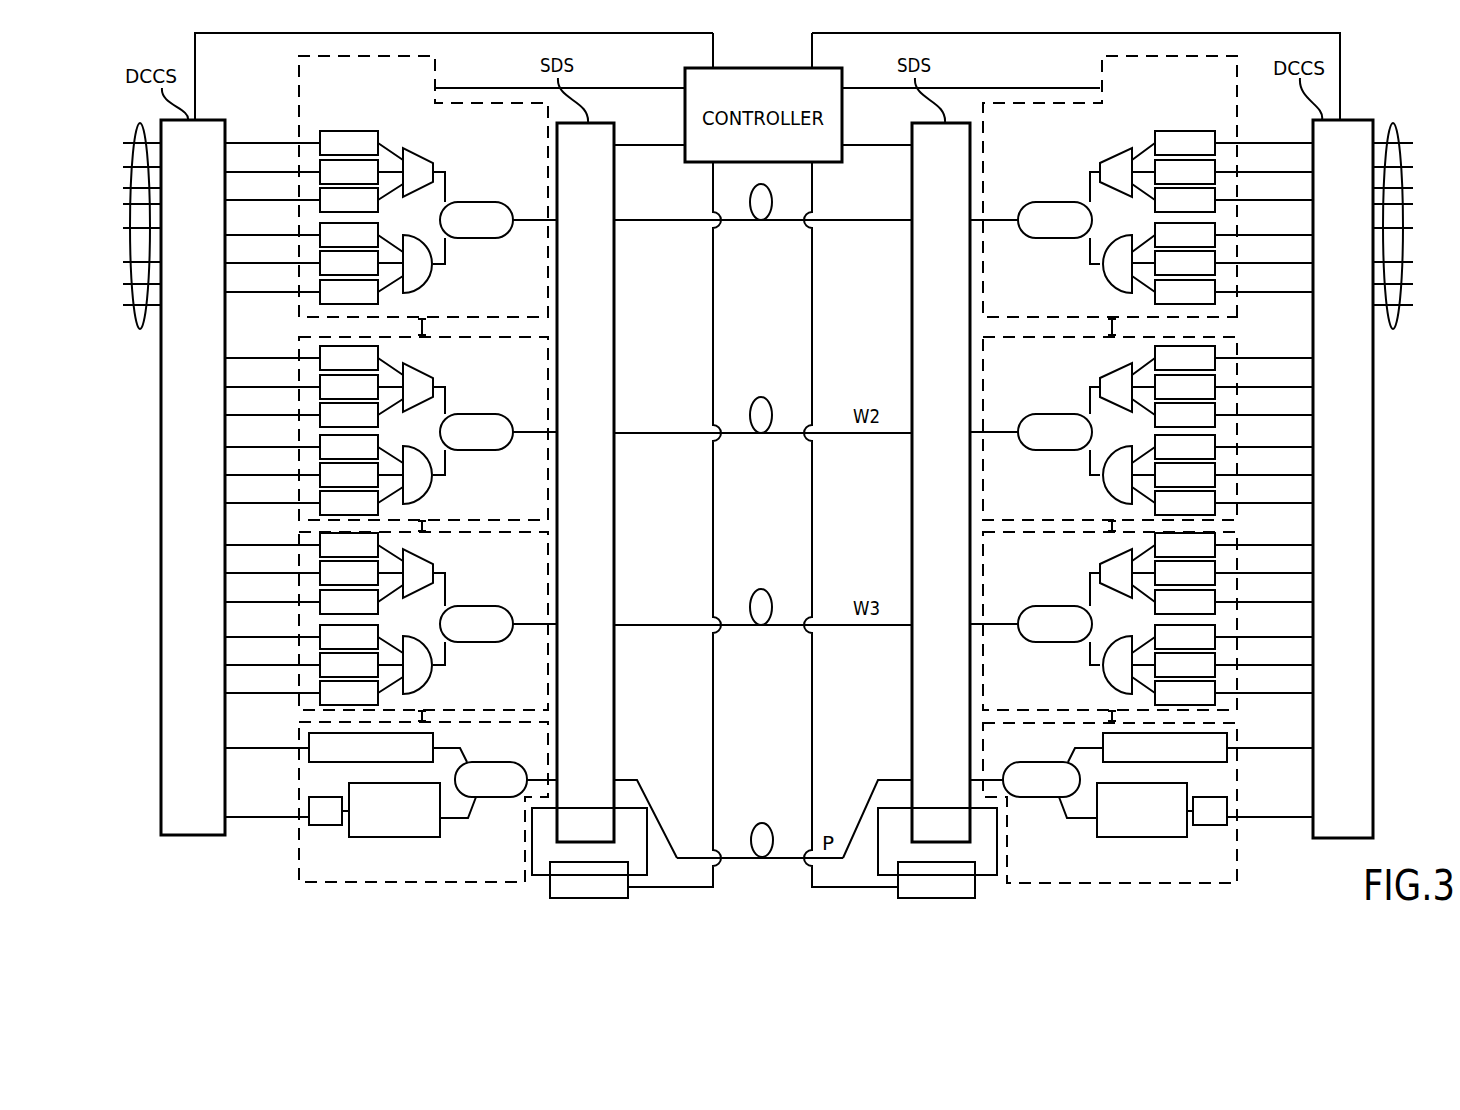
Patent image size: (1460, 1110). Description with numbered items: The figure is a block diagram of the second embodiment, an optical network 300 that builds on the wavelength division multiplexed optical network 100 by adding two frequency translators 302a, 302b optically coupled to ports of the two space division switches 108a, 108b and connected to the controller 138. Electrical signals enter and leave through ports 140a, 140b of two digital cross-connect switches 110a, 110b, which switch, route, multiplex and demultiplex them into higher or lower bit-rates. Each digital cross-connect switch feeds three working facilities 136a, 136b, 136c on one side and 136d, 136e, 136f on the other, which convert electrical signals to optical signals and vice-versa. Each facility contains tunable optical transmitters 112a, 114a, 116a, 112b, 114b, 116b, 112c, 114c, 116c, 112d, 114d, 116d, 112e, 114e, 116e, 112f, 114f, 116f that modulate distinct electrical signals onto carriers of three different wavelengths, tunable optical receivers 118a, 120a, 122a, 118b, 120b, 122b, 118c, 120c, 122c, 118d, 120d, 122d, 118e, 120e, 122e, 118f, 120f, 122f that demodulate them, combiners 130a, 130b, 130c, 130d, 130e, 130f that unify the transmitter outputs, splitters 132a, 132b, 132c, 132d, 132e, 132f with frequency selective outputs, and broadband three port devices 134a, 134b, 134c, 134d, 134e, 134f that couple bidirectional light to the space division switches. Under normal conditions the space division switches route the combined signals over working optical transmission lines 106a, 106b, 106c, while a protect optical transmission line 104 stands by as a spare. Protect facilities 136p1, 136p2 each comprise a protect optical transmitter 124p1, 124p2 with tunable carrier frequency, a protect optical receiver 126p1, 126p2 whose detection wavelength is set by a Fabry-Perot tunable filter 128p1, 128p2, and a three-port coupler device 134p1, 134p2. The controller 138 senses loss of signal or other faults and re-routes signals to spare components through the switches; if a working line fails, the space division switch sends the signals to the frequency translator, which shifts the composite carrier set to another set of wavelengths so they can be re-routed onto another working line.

The optical network 100 is at (696, 507).
The optical network 300 is at (783, 507).
The protect optical transmission line 104 is at (803, 860).
The working optical transmission line 106a is at (828, 222).
The working optical transmission line 106b is at (828, 435).
The working optical transmission line 106c is at (828, 627).
The space division switch 108a is at (615, 688).
The space division switch 108b is at (912, 718).
The digital cross-connect switch 110a is at (161, 786).
The digital cross-connect switch 110b is at (1373, 785).
The optical transmitter 112a is at (321, 133).
The optical transmitter 114a is at (321, 162).
The optical transmitter 116a is at (321, 190).
The optical receiver 118a is at (321, 225).
The optical receiver 120a is at (321, 253).
The optical receiver 122a is at (321, 282).
The optical transmitter 112b is at (321, 348).
The optical transmitter 114b is at (321, 377).
The optical transmitter 116b is at (321, 405).
The optical receiver 118b is at (321, 437).
The optical receiver 120b is at (321, 465).
The optical receiver 122b is at (321, 493).
The optical transmitter 112c is at (321, 535).
The optical transmitter 114c is at (321, 563).
The optical transmitter 116c is at (321, 592).
The optical receiver 118c is at (321, 627).
The optical receiver 120c is at (321, 655).
The optical receiver 122c is at (321, 683).
The optical transmitter 112d is at (1215, 136).
The optical transmitter 114d is at (1215, 165).
The optical transmitter 116d is at (1215, 193).
The optical receiver 118d is at (1215, 228).
The optical receiver 120d is at (1215, 256).
The optical receiver 122d is at (1215, 285).
The optical transmitter 112e is at (1215, 351).
The optical transmitter 114e is at (1215, 380).
The optical transmitter 116e is at (1215, 408).
The optical receiver 118e is at (1215, 440).
The optical receiver 120e is at (1215, 468).
The optical receiver 122e is at (1215, 496).
The optical transmitter 112f is at (1215, 538).
The optical transmitter 114f is at (1215, 566).
The optical transmitter 116f is at (1215, 595).
The optical receiver 118f is at (1215, 630).
The optical receiver 120f is at (1215, 658).
The optical receiver 122f is at (1215, 686).
The protect optical transmitter 124p1 is at (433, 745).
The protect optical transmitter 124p2 is at (1103, 741).
The protect optical receiver 126p1 is at (320, 825).
The protect optical receiver 126p2 is at (1215, 825).
The tunable filter 128p1 is at (395, 837).
The tunable filter 128p2 is at (1135, 837).
The combiner 130a is at (406, 150).
The combiner 130b is at (406, 365).
The combiner 130c is at (406, 551).
The combiner 130d is at (1128, 150).
The combiner 130e is at (1128, 365).
The combiner 130f is at (1128, 551).
The splitter 132a is at (428, 290).
The splitter 132b is at (428, 501).
The splitter 132c is at (428, 691).
The splitter 132d is at (1106, 290).
The splitter 132e is at (1106, 501).
The splitter 132f is at (1106, 691).
The three port device 134a is at (480, 238).
The three port device 134b is at (480, 450).
The three port device 134c is at (480, 642).
The three port device 134d is at (1052, 238).
The three port device 134e is at (1052, 450).
The three port device 134f is at (1052, 642).
The three-port coupler device 134p1 is at (480, 797).
The three-port coupler device 134p2 is at (1040, 797).
The working facility 136a is at (299, 69).
The working facility 136b is at (548, 418).
The working facility 136c is at (548, 648).
The working facility 136d is at (1102, 69).
The working facility 136e is at (983, 418).
The working facility 136f is at (983, 641).
The protect facility 136p1 is at (298, 831).
The protect facility 136p2 is at (1237, 832).
The controller 138 is at (842, 128).
The port 140a is at (140, 329).
The port 140b is at (1393, 329).
The frequency translator 302a is at (567, 893).
The frequency translator 302b is at (914, 893).